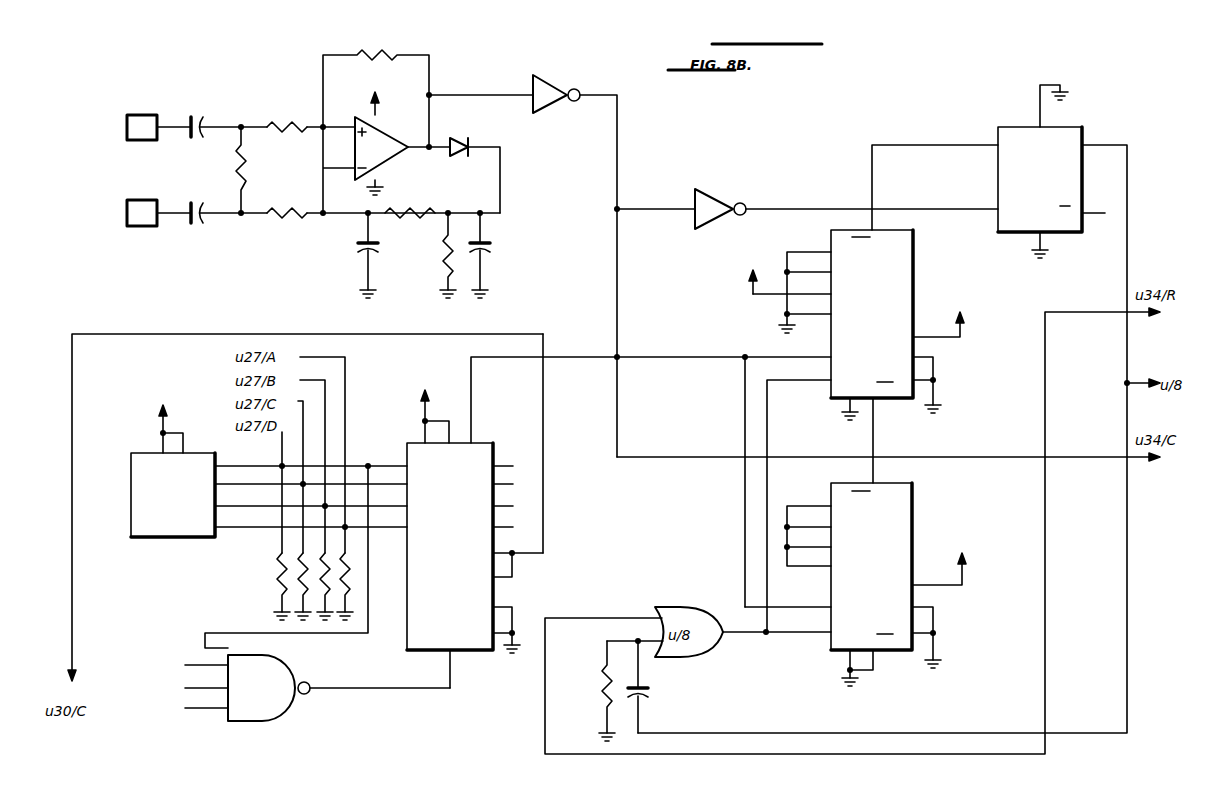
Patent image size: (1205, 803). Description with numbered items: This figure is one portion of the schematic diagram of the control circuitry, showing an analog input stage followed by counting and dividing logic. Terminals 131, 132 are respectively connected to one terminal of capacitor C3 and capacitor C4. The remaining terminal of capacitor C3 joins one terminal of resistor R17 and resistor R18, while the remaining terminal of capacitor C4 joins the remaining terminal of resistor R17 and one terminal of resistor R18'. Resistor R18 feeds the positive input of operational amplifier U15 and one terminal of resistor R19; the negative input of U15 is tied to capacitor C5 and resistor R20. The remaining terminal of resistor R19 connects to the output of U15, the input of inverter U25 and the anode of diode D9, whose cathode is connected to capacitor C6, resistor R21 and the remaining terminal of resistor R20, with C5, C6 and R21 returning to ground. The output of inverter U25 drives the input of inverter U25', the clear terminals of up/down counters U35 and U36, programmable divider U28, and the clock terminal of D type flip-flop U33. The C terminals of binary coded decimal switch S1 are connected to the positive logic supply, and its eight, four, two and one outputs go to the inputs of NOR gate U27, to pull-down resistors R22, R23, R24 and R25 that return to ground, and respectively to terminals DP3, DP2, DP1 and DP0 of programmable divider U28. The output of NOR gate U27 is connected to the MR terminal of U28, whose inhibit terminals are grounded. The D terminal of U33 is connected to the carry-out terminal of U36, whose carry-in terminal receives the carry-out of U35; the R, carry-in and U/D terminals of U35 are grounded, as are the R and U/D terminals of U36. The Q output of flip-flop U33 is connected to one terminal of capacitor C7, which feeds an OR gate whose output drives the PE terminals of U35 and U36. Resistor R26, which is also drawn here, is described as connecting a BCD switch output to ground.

The terminal 131 is at (125, 128).
The terminal 132 is at (125, 214).
The capacitor C3 is at (214, 110).
The capacitor C4 is at (213, 193).
The resistor R17 is at (247, 166).
The resistor R18 is at (284, 114).
The resistor R18' is at (277, 228).
The resistor R19 is at (376, 89).
The operational amplifier U15 is at (386, 164).
The diode D9 is at (465, 140).
The resistor R20 is at (412, 224).
The resistor R21 is at (443, 258).
The capacitor C5 is at (356, 252).
The capacitor C6 is at (492, 255).
The inverter U25 is at (556, 78).
The inverter U25' is at (720, 193).
The D type flip-flop U33 is at (1051, 171).
The up/down counter U36 is at (854, 325).
The up/down counter U35 is at (889, 584).
The programmable divider U28 is at (512, 522).
The NOR gate U27 is at (317, 677).
The binary coded decimal switch S1 is at (173, 470).
The resistor R22 is at (277, 565).
The resistor R23 is at (298, 575).
The resistor R24 is at (320, 582).
The resistor R25 is at (350, 582).
The resistor R26 is at (600, 686).
The capacitor C7 is at (650, 691).